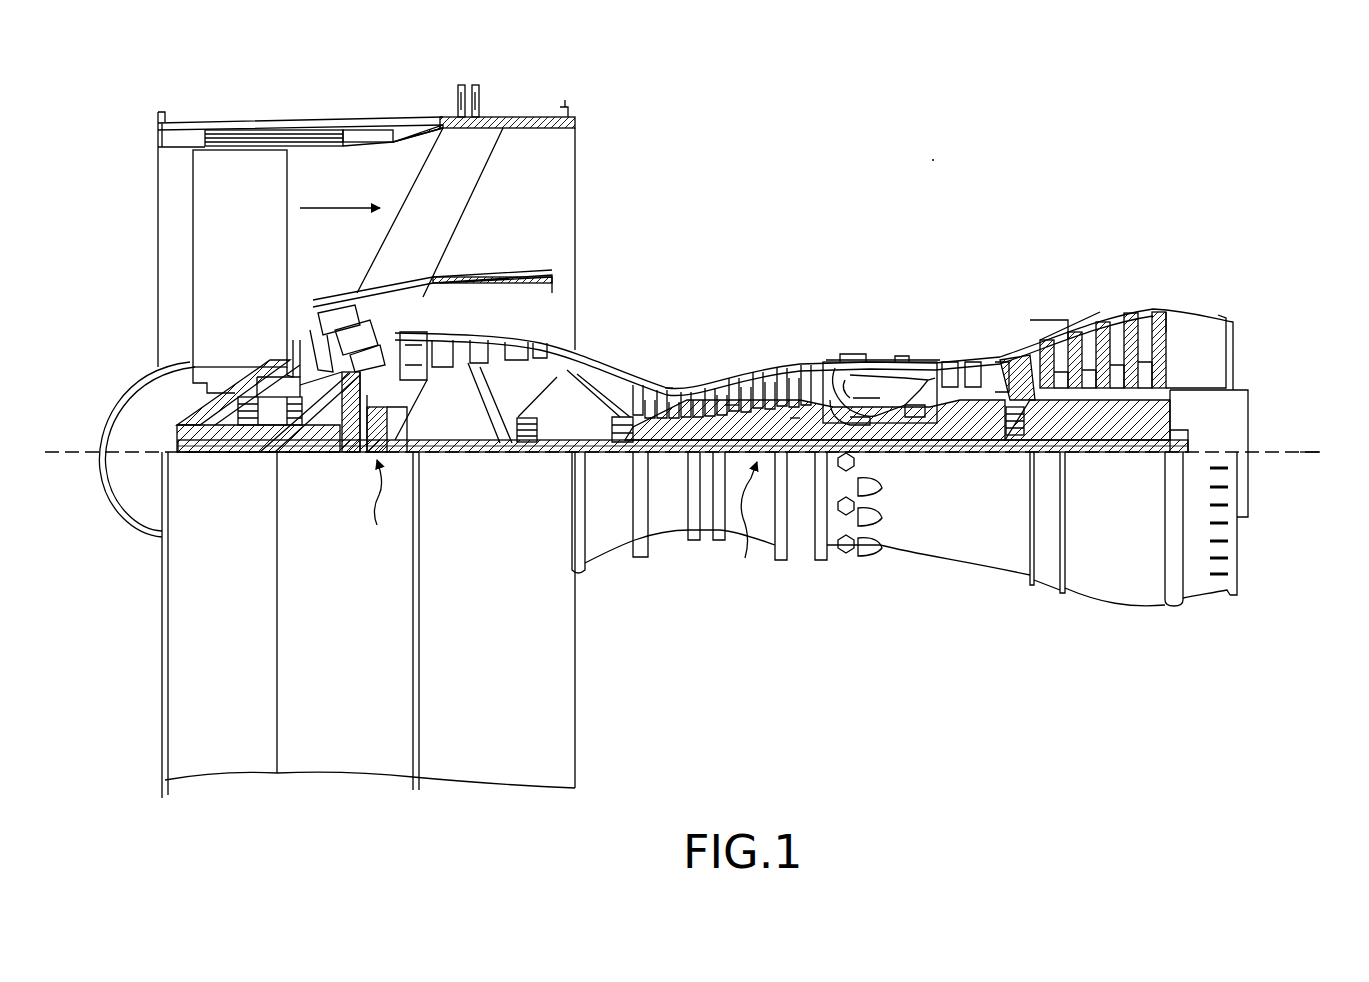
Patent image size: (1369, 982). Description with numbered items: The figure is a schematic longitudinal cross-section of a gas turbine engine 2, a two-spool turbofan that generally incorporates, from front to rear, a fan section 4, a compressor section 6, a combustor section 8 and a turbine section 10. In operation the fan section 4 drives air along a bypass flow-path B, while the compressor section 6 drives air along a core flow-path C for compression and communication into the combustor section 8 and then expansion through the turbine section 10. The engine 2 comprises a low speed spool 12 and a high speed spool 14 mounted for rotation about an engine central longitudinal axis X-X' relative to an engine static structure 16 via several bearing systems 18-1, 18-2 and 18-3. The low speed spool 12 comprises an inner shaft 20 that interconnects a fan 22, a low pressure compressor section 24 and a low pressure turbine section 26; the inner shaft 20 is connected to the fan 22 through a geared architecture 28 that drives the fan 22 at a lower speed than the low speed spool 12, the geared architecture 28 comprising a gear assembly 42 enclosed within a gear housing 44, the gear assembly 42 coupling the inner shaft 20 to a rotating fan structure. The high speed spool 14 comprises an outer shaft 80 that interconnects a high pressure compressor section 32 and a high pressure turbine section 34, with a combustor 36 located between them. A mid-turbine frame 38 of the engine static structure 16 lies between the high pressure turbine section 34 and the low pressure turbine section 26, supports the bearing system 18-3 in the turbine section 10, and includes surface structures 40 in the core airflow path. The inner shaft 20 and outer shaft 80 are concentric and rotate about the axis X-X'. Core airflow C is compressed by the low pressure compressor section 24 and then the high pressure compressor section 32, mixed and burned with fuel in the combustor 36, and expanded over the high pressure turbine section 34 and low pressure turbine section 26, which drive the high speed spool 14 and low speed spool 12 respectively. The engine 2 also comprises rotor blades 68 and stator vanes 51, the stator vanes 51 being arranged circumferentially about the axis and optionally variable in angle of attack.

The gas turbine engine 2 is at (941, 160).
The fan section 4 is at (417, 95).
The compressor section 6 is at (425, 242).
The combustor section 8 is at (940, 242).
The turbine section 10 is at (1176, 242).
The low speed spool 12 is at (747, 526).
The high speed spool 14 is at (795, 420).
The engine static structure 16 is at (342, 760).
The bearing system 18-1 is at (248, 430).
The bearing system 18-2 is at (522, 443).
The bearing system 18-3 is at (1003, 446).
The inner shaft 20 is at (598, 452).
The fan 22 is at (246, 271).
The low pressure compressor section 24 is at (515, 335).
The low pressure turbine section 26 is at (1105, 312).
The geared architecture 28 is at (380, 509).
The high pressure compressor section 32 is at (737, 404).
The high pressure turbine section 34 is at (948, 381).
The combustor 36 is at (880, 374).
The mid-turbine frame 38 is at (1000, 383).
The surface structures 40 is at (1016, 394).
The gear assembly 42 is at (385, 438).
The gear housing 44 is at (378, 398).
The stator vane 51 is at (672, 388).
The rotor blade 68 is at (974, 382).
The outer shaft 80 is at (883, 438).
The bypass flow-path B is at (333, 210).
The core flow-path C is at (305, 326).
The engine central longitudinal axis X is at (682, 417).
The engine central longitudinal axis X' is at (1305, 417).